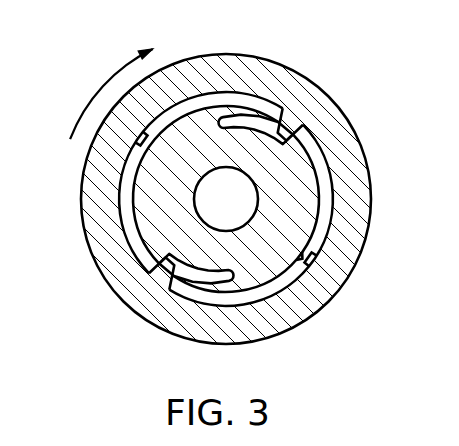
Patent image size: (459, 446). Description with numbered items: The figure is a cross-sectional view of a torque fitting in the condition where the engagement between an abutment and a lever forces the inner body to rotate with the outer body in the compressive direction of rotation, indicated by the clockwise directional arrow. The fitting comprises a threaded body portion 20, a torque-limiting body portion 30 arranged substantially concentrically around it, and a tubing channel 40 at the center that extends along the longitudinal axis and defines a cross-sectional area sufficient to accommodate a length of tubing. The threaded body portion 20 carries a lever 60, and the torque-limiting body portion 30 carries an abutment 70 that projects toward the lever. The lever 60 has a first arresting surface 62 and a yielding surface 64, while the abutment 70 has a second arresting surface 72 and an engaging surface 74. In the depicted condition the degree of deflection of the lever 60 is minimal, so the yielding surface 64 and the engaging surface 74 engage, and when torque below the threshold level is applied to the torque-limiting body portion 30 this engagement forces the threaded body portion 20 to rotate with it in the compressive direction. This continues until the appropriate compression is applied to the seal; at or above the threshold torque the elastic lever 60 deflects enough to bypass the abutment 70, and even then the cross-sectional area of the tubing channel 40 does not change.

The threaded body portion 20 is at (308, 175).
The torque-limiting body portion 30 is at (223, 60).
The tubing channel 40 is at (212, 193).
The lever 60 is at (263, 120).
The first arresting surface 62 is at (148, 262).
The yielding surface 64 is at (160, 271).
The abutment 70 is at (293, 117).
The second arresting surface 72 is at (309, 257).
The engaging surface 74 is at (312, 270).